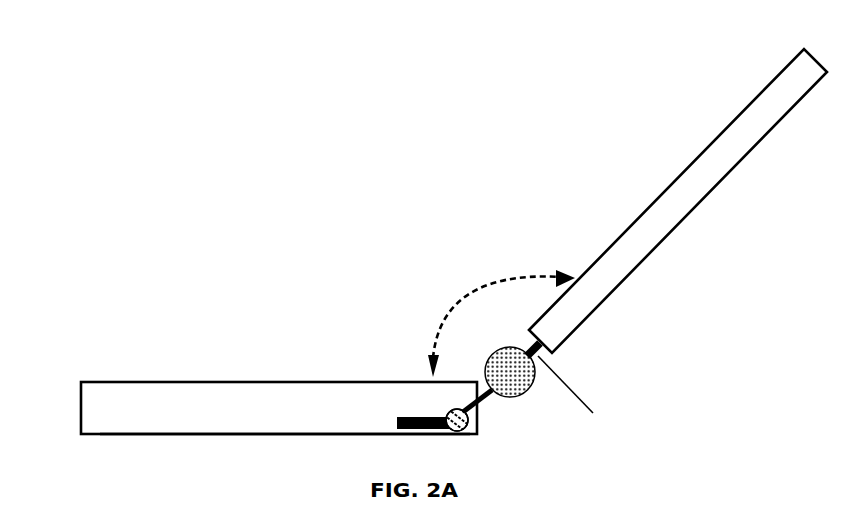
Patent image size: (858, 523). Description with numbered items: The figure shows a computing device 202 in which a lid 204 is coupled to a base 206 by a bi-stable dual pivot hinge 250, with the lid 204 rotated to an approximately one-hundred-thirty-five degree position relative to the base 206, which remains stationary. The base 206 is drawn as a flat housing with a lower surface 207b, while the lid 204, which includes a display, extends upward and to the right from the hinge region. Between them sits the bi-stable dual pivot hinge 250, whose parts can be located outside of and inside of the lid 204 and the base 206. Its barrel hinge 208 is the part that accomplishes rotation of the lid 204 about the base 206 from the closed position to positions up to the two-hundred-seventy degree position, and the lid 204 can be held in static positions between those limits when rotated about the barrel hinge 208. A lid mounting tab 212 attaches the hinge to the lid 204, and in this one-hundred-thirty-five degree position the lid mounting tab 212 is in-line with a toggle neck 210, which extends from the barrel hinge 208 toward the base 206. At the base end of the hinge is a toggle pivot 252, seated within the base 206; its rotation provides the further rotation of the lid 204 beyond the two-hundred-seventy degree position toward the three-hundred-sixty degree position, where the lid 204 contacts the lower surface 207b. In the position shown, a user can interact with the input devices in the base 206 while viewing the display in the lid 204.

The computing device 202 is at (83, 320).
The lid 204 is at (733, 168).
The base 206 is at (147, 427).
The lower surface 207b is at (307, 435).
The barrel hinge 208 is at (527, 390).
The toggle neck 210 is at (487, 398).
The lid mounting tab 212 is at (592, 412).
The bi-stable dual pivot hinge 250 is at (587, 373).
The toggle pivot 252 is at (470, 433).